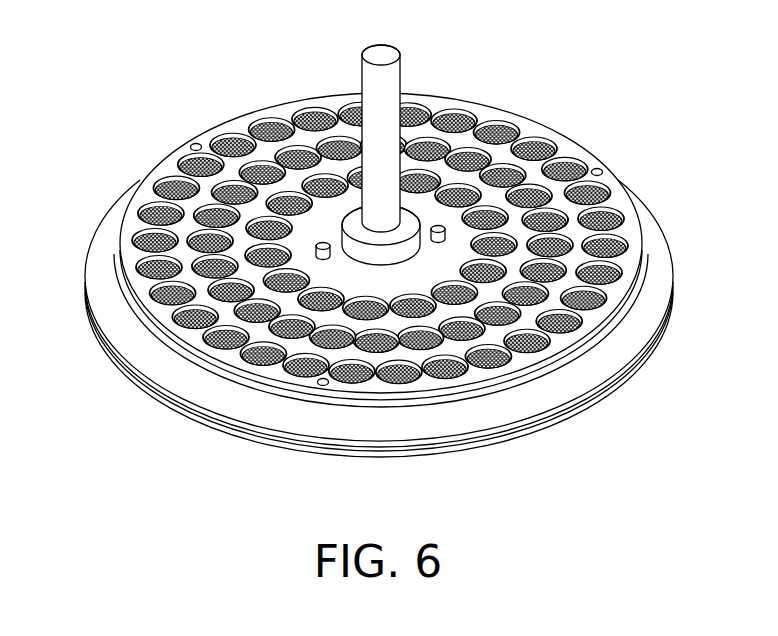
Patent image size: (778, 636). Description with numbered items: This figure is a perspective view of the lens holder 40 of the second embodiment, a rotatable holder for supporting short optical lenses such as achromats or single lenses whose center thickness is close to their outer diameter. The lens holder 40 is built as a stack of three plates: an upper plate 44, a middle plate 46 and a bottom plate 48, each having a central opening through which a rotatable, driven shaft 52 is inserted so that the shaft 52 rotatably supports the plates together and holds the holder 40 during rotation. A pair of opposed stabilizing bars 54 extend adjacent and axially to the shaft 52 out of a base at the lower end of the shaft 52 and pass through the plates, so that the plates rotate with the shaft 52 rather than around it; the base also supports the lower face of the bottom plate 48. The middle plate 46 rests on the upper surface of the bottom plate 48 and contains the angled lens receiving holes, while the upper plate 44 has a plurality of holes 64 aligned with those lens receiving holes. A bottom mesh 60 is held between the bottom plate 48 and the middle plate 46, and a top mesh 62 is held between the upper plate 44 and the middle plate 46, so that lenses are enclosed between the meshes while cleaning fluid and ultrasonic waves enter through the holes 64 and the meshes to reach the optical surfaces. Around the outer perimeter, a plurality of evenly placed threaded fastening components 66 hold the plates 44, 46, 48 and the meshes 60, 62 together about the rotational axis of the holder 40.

The lens holder 40 is at (102, 378).
The upper plate 44 is at (568, 150).
The middle plate 46 is at (607, 358).
The bottom plate 48 is at (487, 442).
The driven shaft 52 is at (396, 72).
The stabilizing bars 54 is at (327, 243).
The bottom mesh 60 is at (560, 412).
The top mesh 62 is at (617, 320).
The holes 64 is at (532, 136).
The threaded fastening components 66 is at (196, 144).